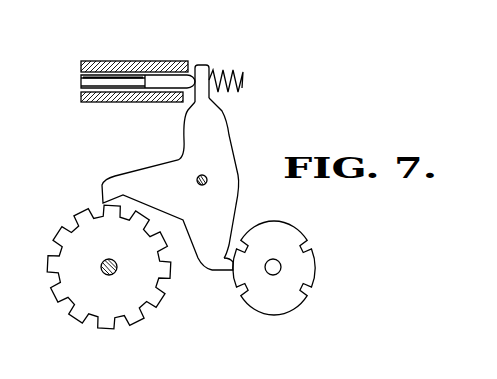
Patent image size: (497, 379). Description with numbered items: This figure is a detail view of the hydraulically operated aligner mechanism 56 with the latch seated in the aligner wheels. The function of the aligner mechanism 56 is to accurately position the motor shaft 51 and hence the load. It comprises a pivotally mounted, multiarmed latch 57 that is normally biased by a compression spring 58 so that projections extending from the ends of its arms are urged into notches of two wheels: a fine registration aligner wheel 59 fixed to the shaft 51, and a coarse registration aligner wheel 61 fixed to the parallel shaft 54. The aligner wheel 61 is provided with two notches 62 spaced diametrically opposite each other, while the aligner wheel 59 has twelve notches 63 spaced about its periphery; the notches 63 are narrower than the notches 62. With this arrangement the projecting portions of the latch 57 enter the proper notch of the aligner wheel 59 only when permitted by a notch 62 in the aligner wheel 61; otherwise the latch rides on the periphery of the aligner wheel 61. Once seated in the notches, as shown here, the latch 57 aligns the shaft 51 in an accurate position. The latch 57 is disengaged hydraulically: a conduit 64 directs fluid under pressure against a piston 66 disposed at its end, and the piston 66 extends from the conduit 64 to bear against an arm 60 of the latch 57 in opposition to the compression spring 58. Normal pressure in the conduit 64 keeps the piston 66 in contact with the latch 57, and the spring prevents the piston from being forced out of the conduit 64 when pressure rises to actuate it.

The motor shaft 51 is at (104, 261).
The parallel shaft 54 is at (273, 259).
The aligner mechanism 56 is at (209, 306).
The multiarmed latch 57 is at (228, 134).
The compression spring 58 is at (242, 88).
The fine registration aligner wheel 59 is at (145, 286).
The arm of the latch 60 is at (204, 66).
The coarse registration aligner wheel 61 is at (305, 297).
The notches 62 is at (232, 278).
The notches 63 is at (140, 318).
The conduit 64 is at (153, 103).
The piston 66 is at (189, 71).